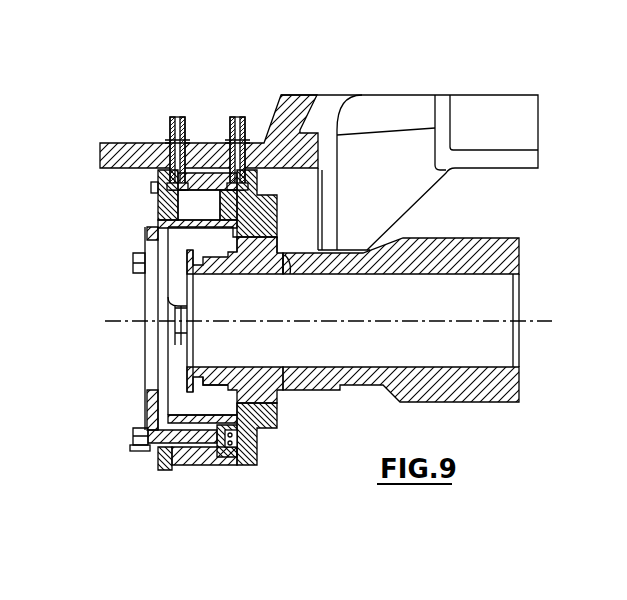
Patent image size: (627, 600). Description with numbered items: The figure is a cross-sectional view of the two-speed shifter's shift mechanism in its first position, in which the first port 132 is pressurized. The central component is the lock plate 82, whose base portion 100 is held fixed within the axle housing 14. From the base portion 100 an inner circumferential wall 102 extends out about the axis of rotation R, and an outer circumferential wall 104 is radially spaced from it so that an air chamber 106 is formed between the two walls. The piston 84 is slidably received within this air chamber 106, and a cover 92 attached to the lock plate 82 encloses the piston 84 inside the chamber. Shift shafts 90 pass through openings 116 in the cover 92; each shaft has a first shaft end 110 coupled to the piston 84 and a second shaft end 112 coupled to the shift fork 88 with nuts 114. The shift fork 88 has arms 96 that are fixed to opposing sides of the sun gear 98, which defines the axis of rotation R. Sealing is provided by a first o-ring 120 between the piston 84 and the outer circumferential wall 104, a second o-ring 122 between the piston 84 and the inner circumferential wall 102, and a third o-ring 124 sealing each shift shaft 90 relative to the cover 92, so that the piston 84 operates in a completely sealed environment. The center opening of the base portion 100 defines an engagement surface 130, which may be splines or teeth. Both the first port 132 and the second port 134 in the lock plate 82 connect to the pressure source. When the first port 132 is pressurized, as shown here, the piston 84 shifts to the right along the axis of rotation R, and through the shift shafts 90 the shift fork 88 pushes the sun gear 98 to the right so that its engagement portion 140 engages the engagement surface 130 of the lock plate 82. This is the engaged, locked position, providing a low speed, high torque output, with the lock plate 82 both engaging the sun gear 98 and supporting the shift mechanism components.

The axle housing 14 is at (263, 146).
The lock plate 82 is at (265, 200).
The piston 84 is at (223, 457).
The shift fork 88 is at (140, 233).
The shift shafts 90 is at (192, 448).
The cover 92 is at (162, 214).
The arms 96 is at (174, 300).
The sun gear 98 is at (455, 238).
The base portion 100 is at (322, 213).
The inner circumferential wall 102 is at (193, 228).
The outer circumferential wall 104 is at (202, 181).
The air chamber 106 is at (151, 187).
The first shaft end 110 is at (268, 428).
The second shaft end 112 is at (133, 438).
The nuts 114 is at (137, 451).
The openings 116 is at (178, 472).
The first o-ring 120 is at (252, 466).
The second o-ring 122 is at (222, 366).
The third o-ring 124 is at (155, 387).
The engagement surface 130 is at (284, 256).
The first port 132 is at (172, 129).
The second port 134 is at (236, 117).
The engagement portion 140 is at (248, 252).
The axis of rotation R is at (126, 322).